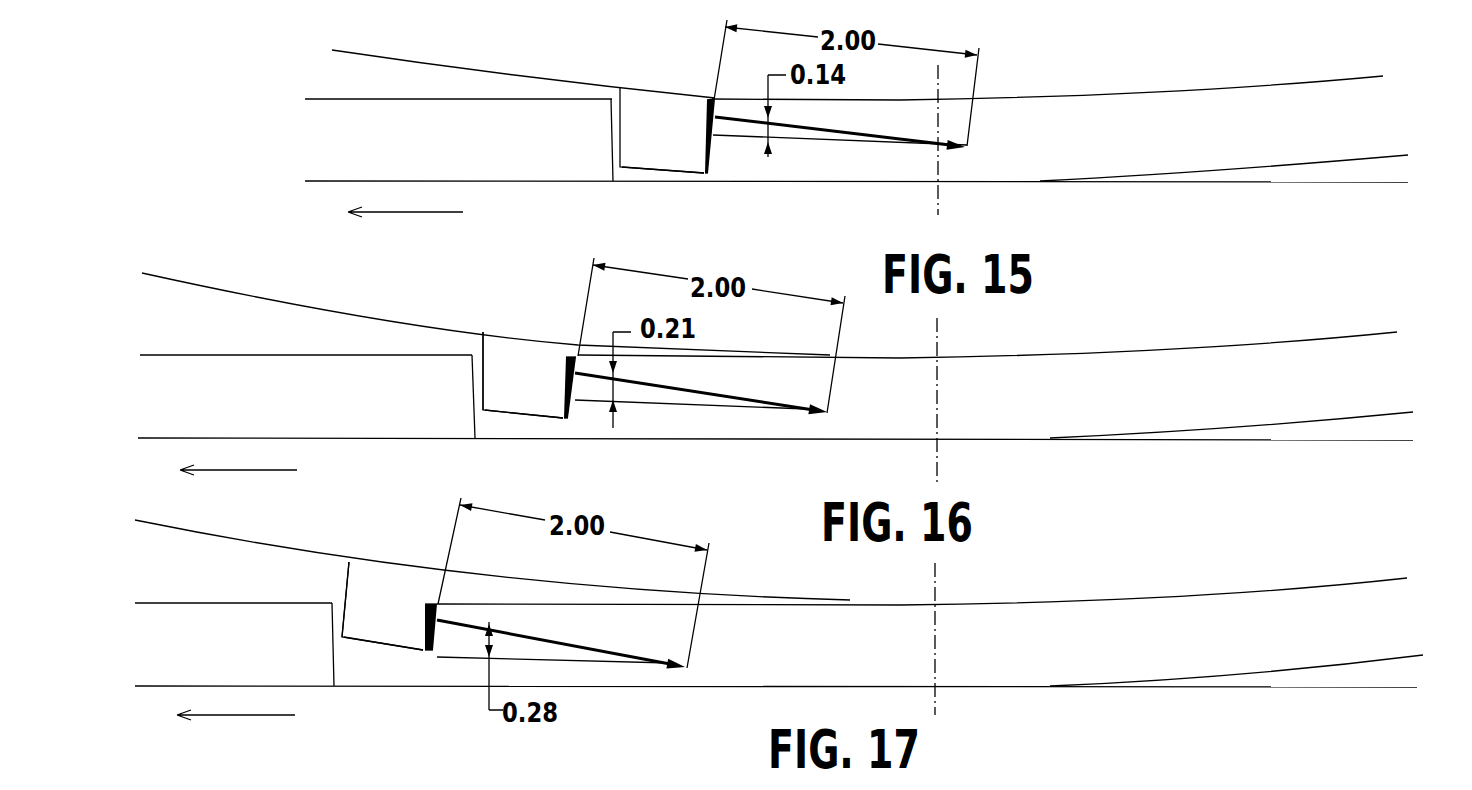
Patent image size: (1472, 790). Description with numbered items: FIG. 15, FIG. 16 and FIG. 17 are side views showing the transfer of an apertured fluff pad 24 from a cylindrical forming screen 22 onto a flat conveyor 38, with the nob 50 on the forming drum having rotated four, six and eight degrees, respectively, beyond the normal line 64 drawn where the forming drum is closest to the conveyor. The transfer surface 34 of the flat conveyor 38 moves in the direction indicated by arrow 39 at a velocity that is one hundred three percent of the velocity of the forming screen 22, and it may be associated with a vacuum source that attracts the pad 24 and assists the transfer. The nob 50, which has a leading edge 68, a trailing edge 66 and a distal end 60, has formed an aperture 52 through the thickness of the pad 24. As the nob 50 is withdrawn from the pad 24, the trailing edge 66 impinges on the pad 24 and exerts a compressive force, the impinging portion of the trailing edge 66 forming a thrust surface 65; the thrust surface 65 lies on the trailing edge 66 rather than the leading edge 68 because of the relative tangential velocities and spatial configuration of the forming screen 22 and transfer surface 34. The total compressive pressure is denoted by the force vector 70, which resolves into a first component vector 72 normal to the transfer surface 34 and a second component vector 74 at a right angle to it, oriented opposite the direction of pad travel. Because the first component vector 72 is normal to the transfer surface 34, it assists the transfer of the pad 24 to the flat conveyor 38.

In FIG. 15, the forming screen 22 is at (411, 63).
In FIG. 16, the forming screen 22 is at (293, 305).
In FIG. 17, the forming screen 22 is at (237, 542).
In FIG. 15, the pad 24 is at (1113, 150).
In FIG. 16, the pad 24 is at (1108, 415).
In FIG. 17, the pad 24 is at (1112, 662).
In FIG. 15, the transfer surface 34 is at (1385, 182).
In FIG. 16, the transfer surface 34 is at (1380, 440).
In FIG. 17, the transfer surface 34 is at (1388, 686).
In FIG. 15, the flat conveyor 38 is at (1210, 184).
In FIG. 16, the flat conveyor 38 is at (1253, 440).
In FIG. 17, the flat conveyor 38 is at (1220, 688).
In FIG. 15, the arrow 39 is at (408, 214).
In FIG. 16, the arrow 39 is at (245, 471).
In FIG. 17, the arrow 39 is at (240, 716).
In FIG. 15, the nob 50 is at (647, 155).
In FIG. 16, the nob 50 is at (497, 400).
In FIG. 17, the nob 50 is at (368, 632).
In FIG. 16, the aperture 52 is at (477, 420).
In FIG. 17, the aperture 52 is at (342, 660).
In FIG. 15, the distal end 60 is at (678, 175).
In FIG. 16, the distal end 60 is at (525, 417).
In FIG. 17, the distal end 60 is at (383, 647).
In FIG. 15, the reference centerline 64 is at (938, 185).
In FIG. 16, the reference centerline 64 is at (938, 442).
In FIG. 17, the reference centerline 64 is at (937, 690).
In FIG. 15, the thrust surface 65 is at (713, 155).
In FIG. 16, the thrust surface 65 is at (572, 398).
In FIG. 17, the thrust surface 65 is at (455, 608).
In FIG. 15, the trailing edge 66 is at (716, 105).
In FIG. 16, the trailing edge 66 is at (580, 350).
In FIG. 17, the trailing edge 66 is at (443, 590).
In FIG. 15, the leading edge 68 is at (622, 123).
In FIG. 16, the leading edge 68 is at (483, 343).
In FIG. 17, the leading edge 68 is at (348, 575).
In FIG. 15, the force vector 70 is at (853, 128).
In FIG. 16, the force vector 70 is at (743, 398).
In FIG. 17, the force vector 70 is at (575, 645).
In FIG. 15, the first component vector 72 is at (713, 137).
In FIG. 16, the first component vector 72 is at (573, 402).
In FIG. 17, the first component vector 72 is at (433, 660).
In FIG. 15, the second component vector 74 is at (830, 142).
In FIG. 16, the second component vector 74 is at (702, 405).
In FIG. 17, the second component vector 74 is at (567, 663).